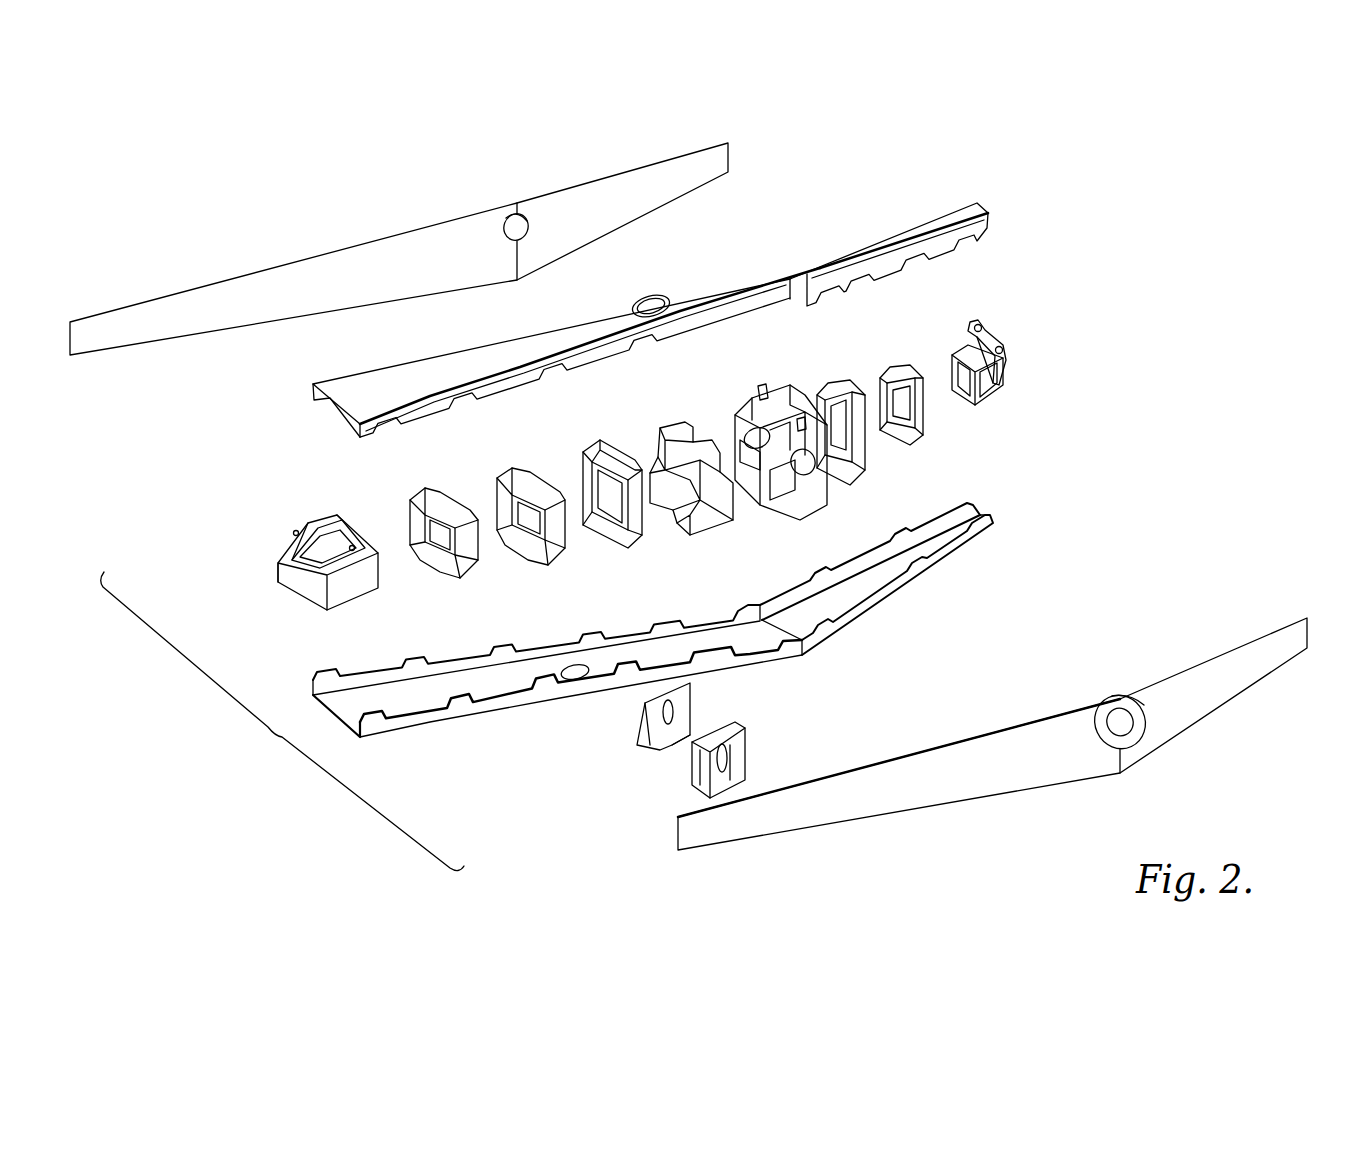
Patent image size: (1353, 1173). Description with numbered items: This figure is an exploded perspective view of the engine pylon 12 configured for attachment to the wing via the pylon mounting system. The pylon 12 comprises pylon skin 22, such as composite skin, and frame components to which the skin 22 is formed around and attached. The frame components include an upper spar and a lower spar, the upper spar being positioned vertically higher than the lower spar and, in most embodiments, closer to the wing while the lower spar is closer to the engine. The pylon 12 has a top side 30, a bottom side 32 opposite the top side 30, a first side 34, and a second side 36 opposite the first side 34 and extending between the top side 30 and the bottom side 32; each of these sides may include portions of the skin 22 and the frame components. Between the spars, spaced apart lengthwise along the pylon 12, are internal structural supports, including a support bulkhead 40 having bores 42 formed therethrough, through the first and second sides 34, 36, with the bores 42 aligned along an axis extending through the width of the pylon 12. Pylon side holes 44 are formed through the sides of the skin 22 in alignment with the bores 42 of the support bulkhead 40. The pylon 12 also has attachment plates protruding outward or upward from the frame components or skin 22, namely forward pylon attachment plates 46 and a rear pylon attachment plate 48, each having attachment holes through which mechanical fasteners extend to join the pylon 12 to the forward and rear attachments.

The pylon 12 is at (1117, 252).
The pylon skin 22 is at (562, 197).
The top side 30 is at (700, 290).
The bottom side 32 is at (472, 722).
The first side 34 is at (870, 808).
The second side 36 is at (343, 262).
The support bulkhead 40 is at (830, 497).
The bore 42 is at (758, 440).
The pylon side hole 44 is at (524, 234).
The forward pylon attachment plate 46 is at (765, 390).
The rear pylon attachment plate 48 is at (985, 325).